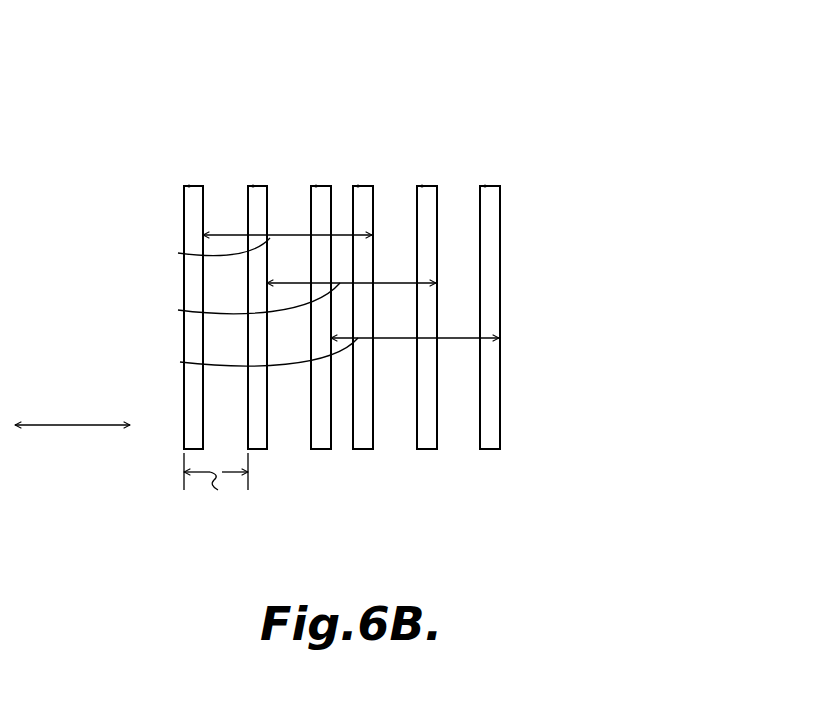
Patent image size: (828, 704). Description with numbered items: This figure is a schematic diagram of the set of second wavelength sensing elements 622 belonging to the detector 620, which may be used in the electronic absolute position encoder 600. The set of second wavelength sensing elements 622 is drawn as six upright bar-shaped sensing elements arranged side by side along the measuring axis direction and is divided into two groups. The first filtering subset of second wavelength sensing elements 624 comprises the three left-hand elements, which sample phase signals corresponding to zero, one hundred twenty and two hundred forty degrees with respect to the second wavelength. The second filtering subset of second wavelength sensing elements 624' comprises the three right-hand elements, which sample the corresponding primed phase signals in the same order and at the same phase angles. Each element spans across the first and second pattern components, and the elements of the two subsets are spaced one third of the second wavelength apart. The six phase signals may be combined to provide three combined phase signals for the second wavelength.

The electronic absolute position encoder 600 is at (538, 57).
The detector 620 is at (271, 270).
The set of second wavelength sensing elements 622 is at (172, 83).
The first filtering subset of second wavelength sensing elements 624 is at (261, 266).
The second filtering subset of second wavelength sensing elements 624' is at (430, 267).